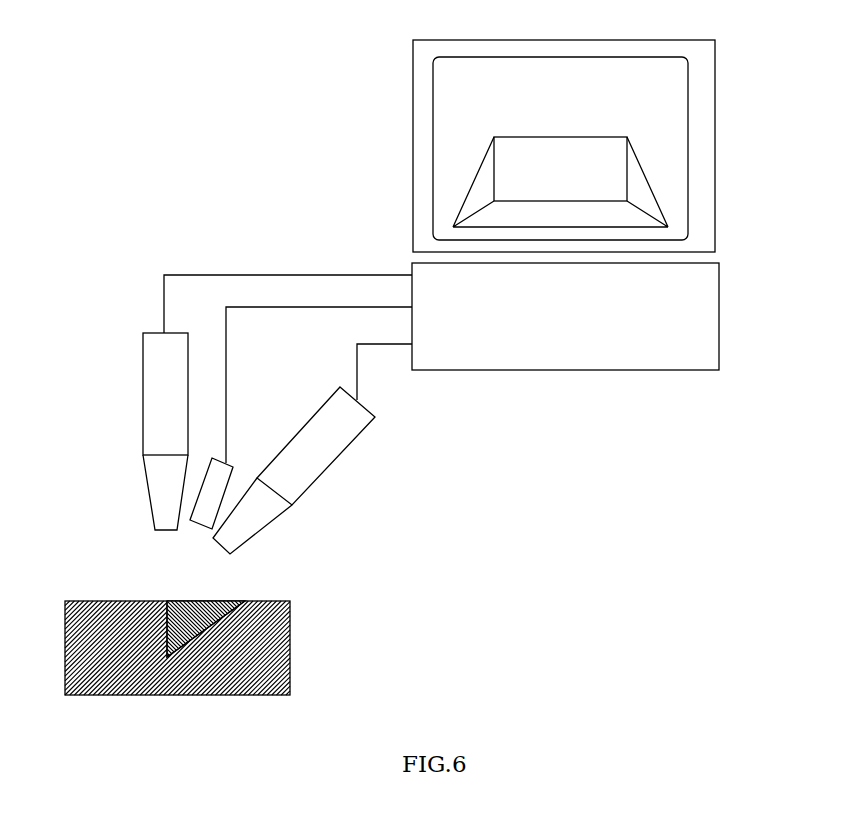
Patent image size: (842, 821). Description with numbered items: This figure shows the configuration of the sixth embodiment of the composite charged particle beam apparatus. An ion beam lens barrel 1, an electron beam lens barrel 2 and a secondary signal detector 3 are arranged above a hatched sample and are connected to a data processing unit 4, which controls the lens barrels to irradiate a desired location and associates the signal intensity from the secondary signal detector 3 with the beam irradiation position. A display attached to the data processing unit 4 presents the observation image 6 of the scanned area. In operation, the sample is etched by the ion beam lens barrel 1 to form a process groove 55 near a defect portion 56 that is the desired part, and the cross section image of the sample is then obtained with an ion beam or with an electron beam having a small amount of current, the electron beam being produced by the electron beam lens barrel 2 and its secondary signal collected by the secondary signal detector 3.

The ion beam lens barrel 1 is at (153, 397).
The electron beam lens barrel 2 is at (325, 457).
The secondary signal detector 3 is at (223, 477).
The data processing unit 4 is at (573, 350).
The observation image 6 is at (689, 63).
The process groove 55 is at (205, 612).
The defect portion 56 is at (147, 620).